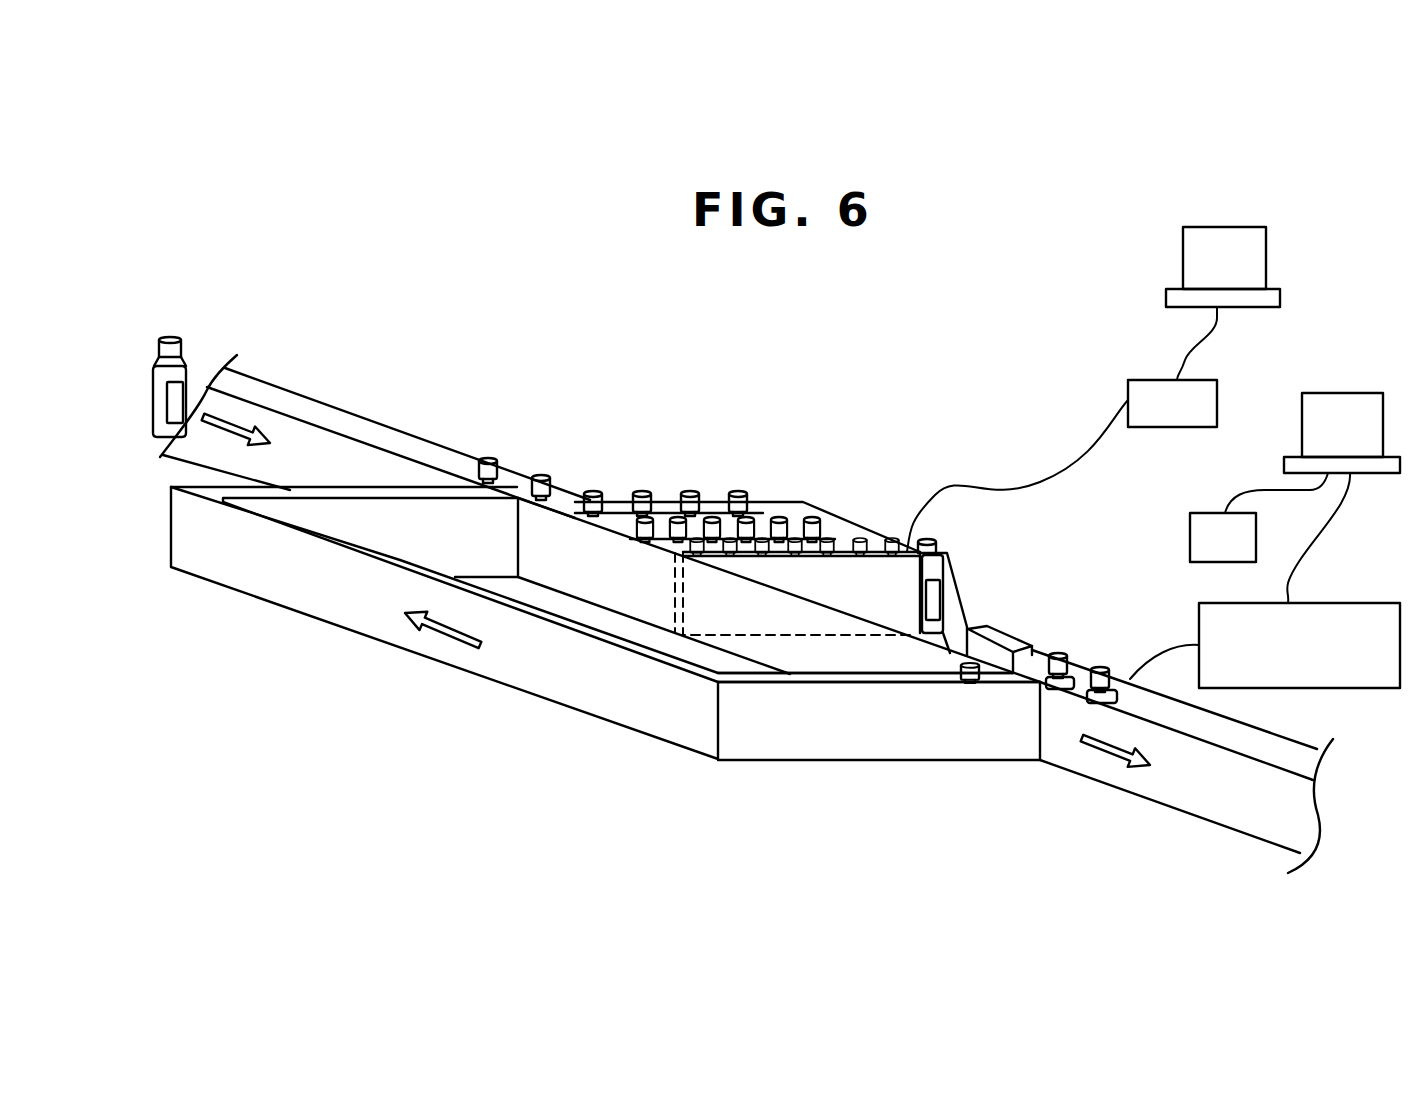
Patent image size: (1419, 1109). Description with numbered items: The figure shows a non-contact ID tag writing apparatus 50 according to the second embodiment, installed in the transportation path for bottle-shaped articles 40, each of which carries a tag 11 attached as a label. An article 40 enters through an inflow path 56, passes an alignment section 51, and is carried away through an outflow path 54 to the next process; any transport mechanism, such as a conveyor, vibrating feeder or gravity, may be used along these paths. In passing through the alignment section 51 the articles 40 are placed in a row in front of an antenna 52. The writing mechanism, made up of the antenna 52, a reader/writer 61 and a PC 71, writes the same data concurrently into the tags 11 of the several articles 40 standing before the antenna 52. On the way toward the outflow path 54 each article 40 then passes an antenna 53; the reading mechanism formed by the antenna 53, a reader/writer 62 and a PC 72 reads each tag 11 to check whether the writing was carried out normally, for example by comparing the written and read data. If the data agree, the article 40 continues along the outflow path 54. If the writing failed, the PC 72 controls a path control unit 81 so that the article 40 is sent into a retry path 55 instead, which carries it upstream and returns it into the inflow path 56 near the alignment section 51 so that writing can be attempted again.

The tag 11 is at (178, 398).
The article 40 is at (201, 354).
The non-contact ID tag writing apparatus 50 is at (448, 762).
The alignment section 51 is at (767, 491).
The antenna 52 is at (873, 572).
The antenna 53 is at (997, 631).
The outflow path 54 is at (1210, 727).
The retry path 55 is at (820, 682).
The inflow path 56 is at (378, 432).
The reader/writer 61 is at (1142, 380).
The reader/writer 62 is at (1205, 513).
The PC 71 is at (1224, 227).
The PC 72 is at (1343, 393).
The path control unit 81 is at (1361, 603).